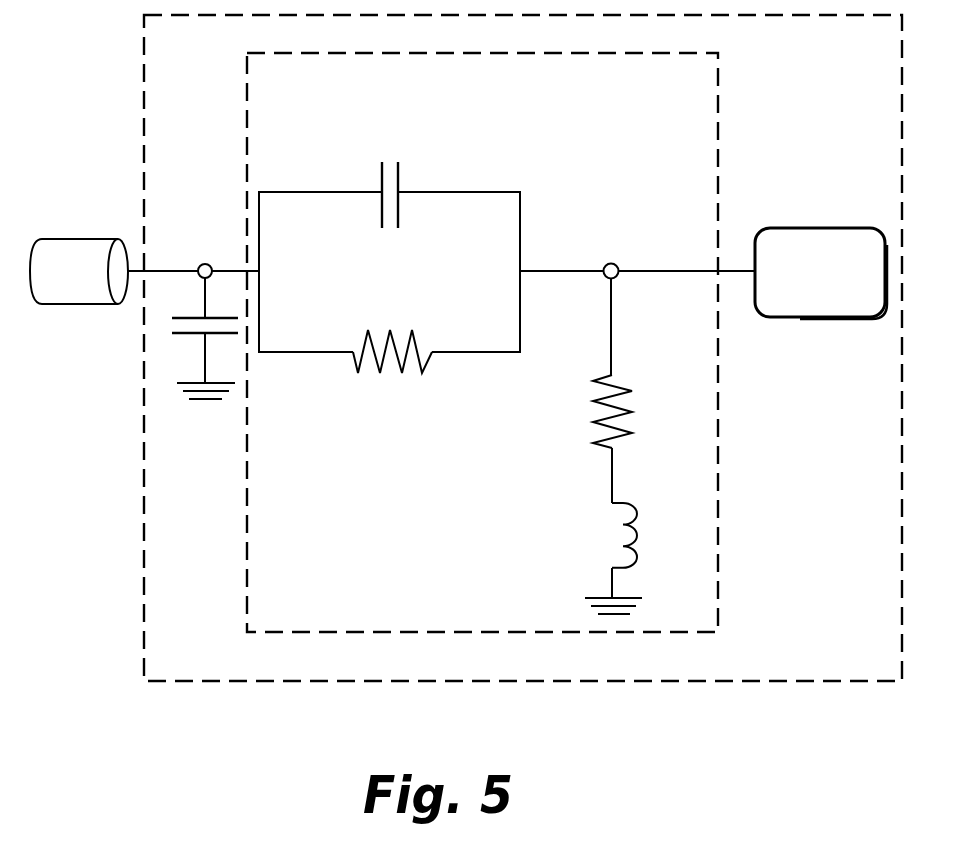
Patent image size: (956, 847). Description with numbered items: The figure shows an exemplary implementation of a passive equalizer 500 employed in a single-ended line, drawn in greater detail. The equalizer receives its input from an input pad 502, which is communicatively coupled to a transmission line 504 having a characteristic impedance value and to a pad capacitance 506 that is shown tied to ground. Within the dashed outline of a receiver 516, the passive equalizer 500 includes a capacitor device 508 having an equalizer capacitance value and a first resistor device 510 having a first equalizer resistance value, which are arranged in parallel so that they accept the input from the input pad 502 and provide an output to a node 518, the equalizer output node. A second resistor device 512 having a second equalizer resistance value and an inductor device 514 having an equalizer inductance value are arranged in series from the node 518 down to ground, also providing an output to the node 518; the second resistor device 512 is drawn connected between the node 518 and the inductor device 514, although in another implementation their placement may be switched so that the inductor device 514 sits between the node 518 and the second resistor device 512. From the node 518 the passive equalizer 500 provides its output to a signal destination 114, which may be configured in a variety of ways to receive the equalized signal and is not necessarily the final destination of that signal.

The passive equalizer 500 is at (588, 82).
The input pad 502 is at (200, 265).
The transmission line 504 is at (55, 298).
The pad capacitance 506 is at (172, 334).
The capacitor device 508 is at (366, 152).
The first resistor device 510 is at (359, 417).
The second resistor device 512 is at (634, 364).
The inductor device 514 is at (579, 500).
The receiver 516 is at (587, 44).
The node 518 is at (612, 264).
The signal destination 114 is at (802, 309).